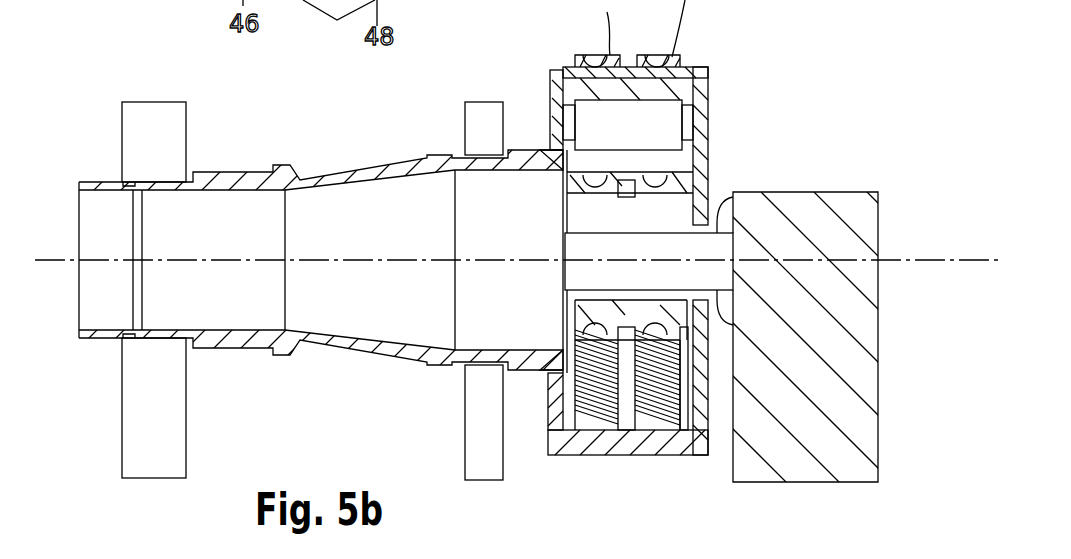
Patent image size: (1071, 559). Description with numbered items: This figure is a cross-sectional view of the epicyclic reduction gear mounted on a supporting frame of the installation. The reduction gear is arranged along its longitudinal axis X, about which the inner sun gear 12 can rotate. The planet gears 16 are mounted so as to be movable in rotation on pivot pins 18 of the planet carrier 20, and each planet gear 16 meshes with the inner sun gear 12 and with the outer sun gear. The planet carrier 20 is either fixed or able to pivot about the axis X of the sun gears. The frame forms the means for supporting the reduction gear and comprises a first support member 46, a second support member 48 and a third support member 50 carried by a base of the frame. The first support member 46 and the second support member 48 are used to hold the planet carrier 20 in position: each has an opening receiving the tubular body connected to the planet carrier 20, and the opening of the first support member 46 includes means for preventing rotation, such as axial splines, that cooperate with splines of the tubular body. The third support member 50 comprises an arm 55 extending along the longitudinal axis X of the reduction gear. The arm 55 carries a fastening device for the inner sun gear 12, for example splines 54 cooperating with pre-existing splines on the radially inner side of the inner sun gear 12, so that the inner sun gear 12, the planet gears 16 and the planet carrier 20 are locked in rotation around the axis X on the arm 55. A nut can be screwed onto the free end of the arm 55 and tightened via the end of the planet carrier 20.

The inner sun gear 12 is at (717, 217).
The planet gear 16 is at (697, 67).
The pivot pin 18 is at (680, 90).
The planet carrier 20 is at (355, 172).
The first support member 46 is at (160, 432).
The second support member 48 is at (483, 441).
The third support member 50 is at (803, 417).
The splines 54 is at (640, 303).
The arm 55 is at (717, 223).
The longitudinal axis X is at (55, 262).